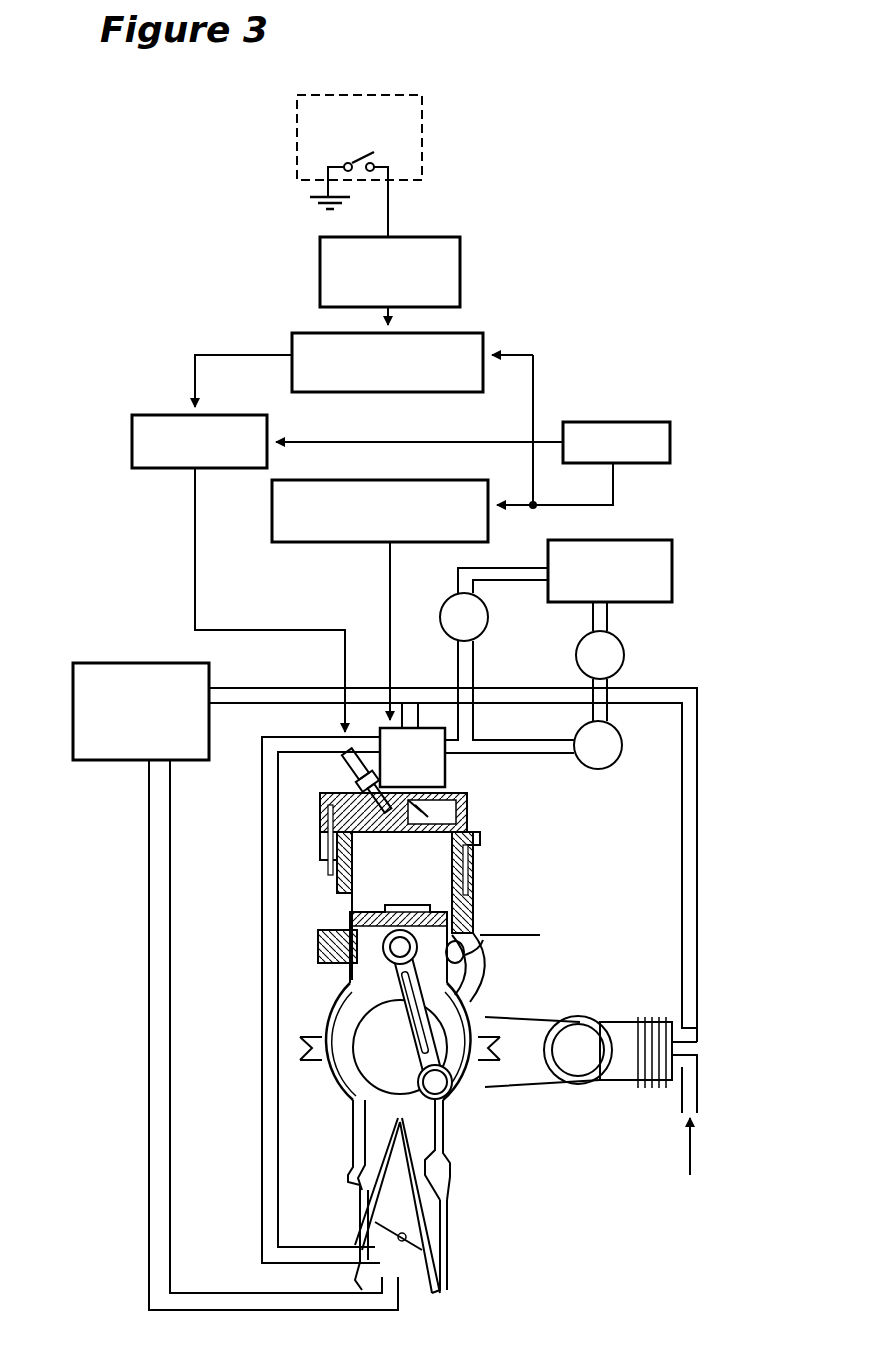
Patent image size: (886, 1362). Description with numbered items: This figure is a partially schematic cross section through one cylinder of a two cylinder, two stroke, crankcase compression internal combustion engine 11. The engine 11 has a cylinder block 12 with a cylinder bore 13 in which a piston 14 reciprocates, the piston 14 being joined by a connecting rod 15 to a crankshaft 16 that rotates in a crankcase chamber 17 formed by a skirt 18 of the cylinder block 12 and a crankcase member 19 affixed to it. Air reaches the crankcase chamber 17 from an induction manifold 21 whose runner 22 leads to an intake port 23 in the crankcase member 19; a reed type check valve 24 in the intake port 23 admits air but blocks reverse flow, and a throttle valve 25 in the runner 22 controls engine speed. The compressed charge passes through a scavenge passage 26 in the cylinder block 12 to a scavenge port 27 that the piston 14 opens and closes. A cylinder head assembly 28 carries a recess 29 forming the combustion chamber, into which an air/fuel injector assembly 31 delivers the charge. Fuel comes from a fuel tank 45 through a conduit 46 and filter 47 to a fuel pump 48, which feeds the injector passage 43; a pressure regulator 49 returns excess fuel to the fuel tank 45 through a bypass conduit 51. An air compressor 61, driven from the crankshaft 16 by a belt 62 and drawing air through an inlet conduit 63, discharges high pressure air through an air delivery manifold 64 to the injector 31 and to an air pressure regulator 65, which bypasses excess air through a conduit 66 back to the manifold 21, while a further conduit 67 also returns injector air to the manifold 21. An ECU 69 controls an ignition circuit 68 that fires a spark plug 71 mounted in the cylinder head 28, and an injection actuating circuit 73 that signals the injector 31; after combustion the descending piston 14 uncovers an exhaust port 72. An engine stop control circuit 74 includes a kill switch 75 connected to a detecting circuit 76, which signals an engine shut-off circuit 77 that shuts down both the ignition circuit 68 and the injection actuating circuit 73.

The internal combustion engine 11 is at (474, 1025).
The cylinder block 12 is at (468, 905).
The cylinder bore 13 is at (480, 835).
The piston 14 is at (482, 940).
The connecting rod 15 is at (488, 990).
The crankshaft 16 is at (448, 1127).
The crankcase chamber 17 is at (388, 1128).
The skirt 18 is at (332, 1015).
The crankcase member 19 is at (350, 1108).
The induction manifold 21 is at (455, 1237).
The runner 22 is at (448, 1196).
The intake port 23 is at (455, 1157).
The reed type check valve 24 is at (358, 1198).
The throttle valve 25 is at (422, 1248).
The scavenge passage 26 is at (540, 935).
The scavenge port 27 is at (447, 915).
The cylinder head assembly 28 is at (467, 803).
The recess 29 is at (405, 822).
The air/fuel injector assembly 31 is at (432, 728).
The injector passage 43 is at (480, 753).
The fuel tank 45 is at (672, 571).
The conduit 46 is at (607, 625).
The filter 47 is at (645, 668).
The fuel pump 48 is at (622, 742).
The pressure regulator 49 is at (487, 612).
The bypass conduit 51 is at (458, 588).
The air compressor 61 is at (622, 1082).
The belt 62 is at (540, 1015).
The inlet conduit 63 is at (697, 1095).
The air delivery manifold 64 is at (697, 700).
The air pressure regulator 65 is at (73, 688).
The conduit 66 is at (170, 1250).
The further conduit 67 is at (262, 975).
The ignition circuit 68 is at (132, 440).
The ECU 69 is at (670, 443).
The spark plug 71 is at (350, 770).
The exhaust port 72 is at (322, 880).
The injection actuating circuit 73 is at (272, 503).
The engine stop control circuit 74 is at (502, 268).
The kill switch 75 is at (422, 130).
The detecting circuit 76 is at (320, 262).
The engine shut-off circuit 77 is at (462, 333).